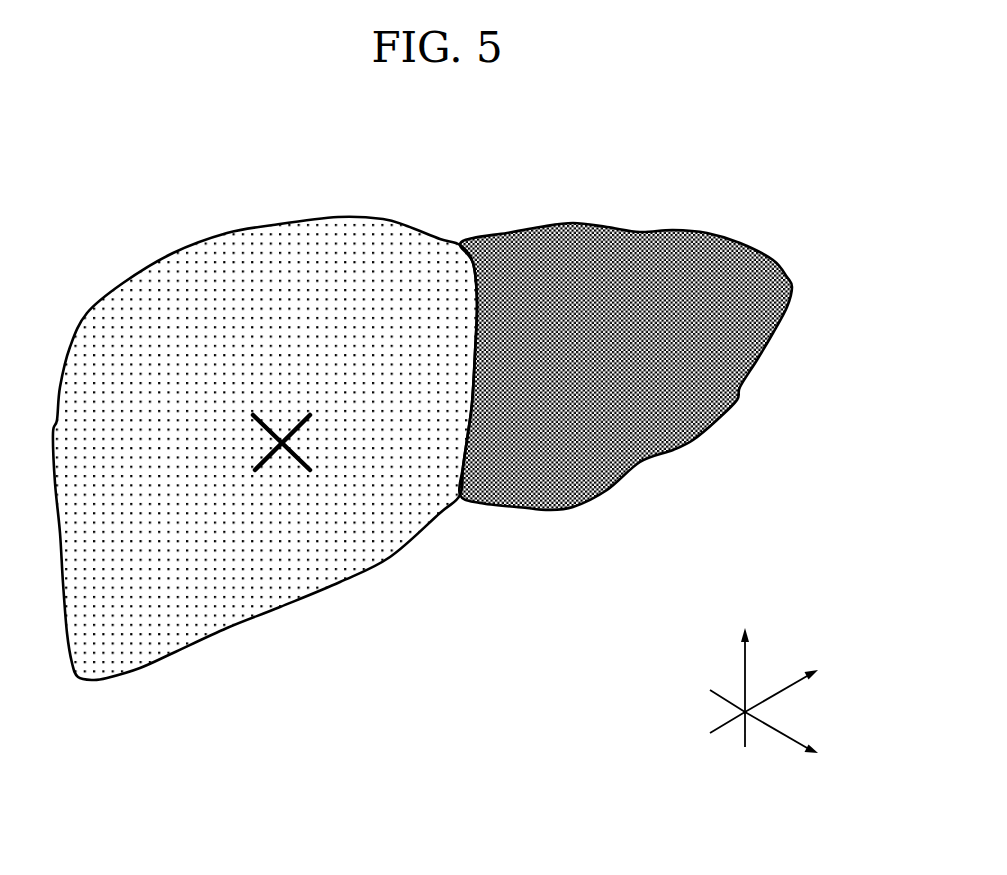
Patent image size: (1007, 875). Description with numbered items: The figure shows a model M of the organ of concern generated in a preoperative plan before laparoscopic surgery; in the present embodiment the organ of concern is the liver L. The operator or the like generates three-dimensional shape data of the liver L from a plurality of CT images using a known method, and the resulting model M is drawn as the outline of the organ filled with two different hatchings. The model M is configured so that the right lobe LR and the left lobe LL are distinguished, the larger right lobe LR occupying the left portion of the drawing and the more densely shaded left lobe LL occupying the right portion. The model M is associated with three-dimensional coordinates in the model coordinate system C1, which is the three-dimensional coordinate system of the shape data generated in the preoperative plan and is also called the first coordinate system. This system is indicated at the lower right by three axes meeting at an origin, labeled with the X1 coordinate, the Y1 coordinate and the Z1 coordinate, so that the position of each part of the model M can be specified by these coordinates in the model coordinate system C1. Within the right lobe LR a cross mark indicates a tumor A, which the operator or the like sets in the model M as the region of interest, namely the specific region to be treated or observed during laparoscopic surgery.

The model M is at (422, 418).
The liver L is at (422, 428).
The right lobe LR is at (232, 600).
The left lobe LL is at (703, 415).
The tumor A is at (283, 440).
The model coordinate system C1 is at (735, 736).
The X1 coordinate X1 is at (799, 743).
The Y1 coordinate Y1 is at (744, 653).
The Z1 coordinate Z1 is at (799, 677).